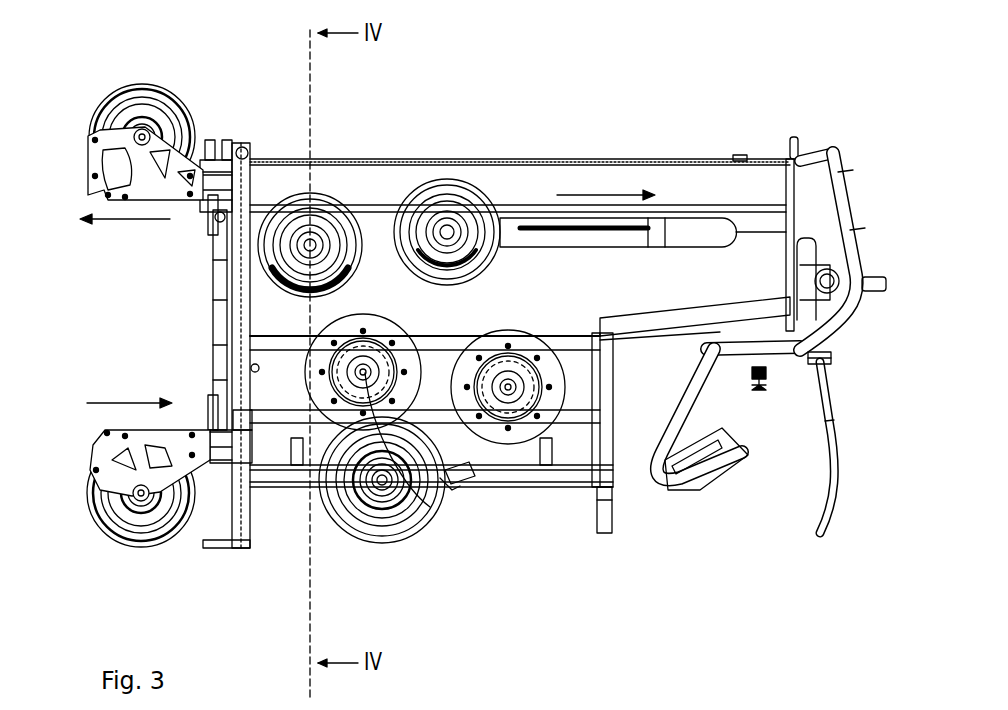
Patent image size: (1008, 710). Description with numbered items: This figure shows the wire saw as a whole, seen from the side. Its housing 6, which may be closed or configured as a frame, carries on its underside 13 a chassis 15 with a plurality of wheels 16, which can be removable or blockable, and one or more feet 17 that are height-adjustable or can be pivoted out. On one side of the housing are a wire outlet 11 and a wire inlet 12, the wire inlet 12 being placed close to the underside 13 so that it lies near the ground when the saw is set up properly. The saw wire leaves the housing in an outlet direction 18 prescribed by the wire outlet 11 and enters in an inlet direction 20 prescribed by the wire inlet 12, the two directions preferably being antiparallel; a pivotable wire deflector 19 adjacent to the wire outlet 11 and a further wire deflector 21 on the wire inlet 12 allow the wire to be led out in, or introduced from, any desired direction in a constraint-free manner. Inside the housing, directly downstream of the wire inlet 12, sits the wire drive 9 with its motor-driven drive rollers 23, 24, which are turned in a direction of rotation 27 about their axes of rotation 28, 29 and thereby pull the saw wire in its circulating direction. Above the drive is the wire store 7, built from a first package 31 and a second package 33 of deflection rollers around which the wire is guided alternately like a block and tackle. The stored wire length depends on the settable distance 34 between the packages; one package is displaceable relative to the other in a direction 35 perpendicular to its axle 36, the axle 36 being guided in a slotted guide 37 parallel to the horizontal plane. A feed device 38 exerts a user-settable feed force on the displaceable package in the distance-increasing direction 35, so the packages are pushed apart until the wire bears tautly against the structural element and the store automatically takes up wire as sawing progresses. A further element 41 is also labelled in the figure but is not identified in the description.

The housing 6 is at (732, 187).
The wire store 7 is at (675, 94).
The wire drive 9 is at (658, 636).
The wire outlet 11 is at (197, 183).
The wire inlet 12 is at (197, 448).
The underside 13 is at (590, 478).
The chassis 15 is at (287, 478).
The wheels 16 is at (390, 530).
The feet 17 is at (240, 532).
The outlet direction 18 is at (128, 218).
The wire deflector 19 is at (180, 123).
The inlet direction 20 is at (123, 402).
The wire deflector 21 is at (133, 518).
The drive roller 23 is at (460, 375).
The drive roller 24 is at (495, 408).
The direction of rotation 27 is at (508, 390).
The axis of rotation 28 is at (383, 378).
The axis of rotation 29 is at (587, 477).
The first package 31 is at (285, 240).
The second package 33 is at (417, 230).
The distance 34 is at (377, 240).
The direction 35 is at (593, 193).
The axle 36 is at (447, 232).
The slotted guide 37 is at (682, 232).
The feed device 38 is at (522, 240).
The first pulley axle 41 is at (311, 242).